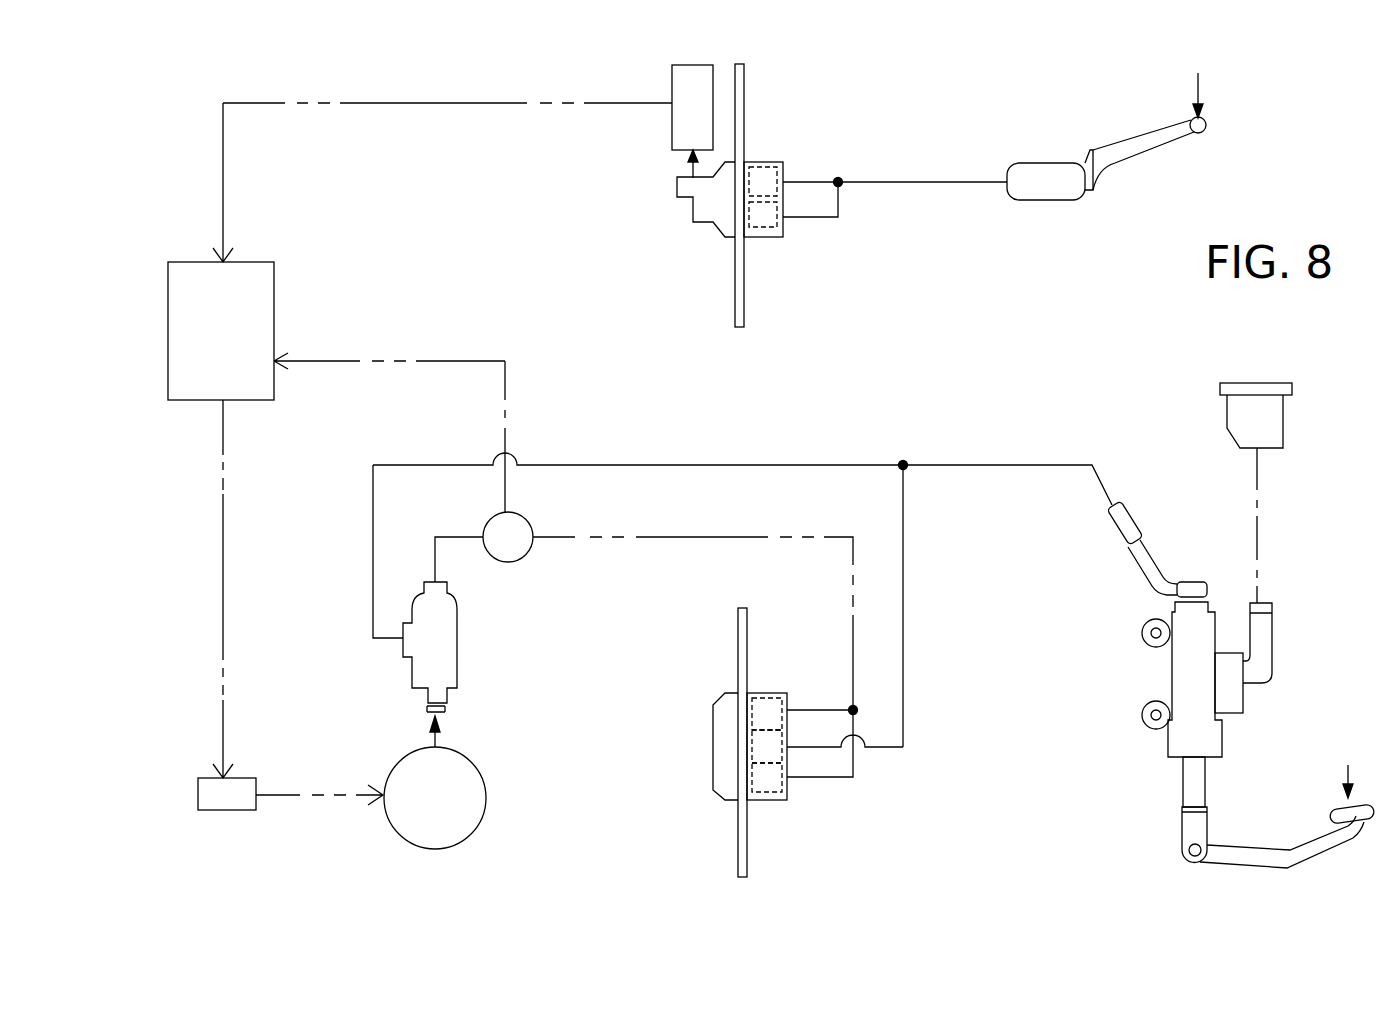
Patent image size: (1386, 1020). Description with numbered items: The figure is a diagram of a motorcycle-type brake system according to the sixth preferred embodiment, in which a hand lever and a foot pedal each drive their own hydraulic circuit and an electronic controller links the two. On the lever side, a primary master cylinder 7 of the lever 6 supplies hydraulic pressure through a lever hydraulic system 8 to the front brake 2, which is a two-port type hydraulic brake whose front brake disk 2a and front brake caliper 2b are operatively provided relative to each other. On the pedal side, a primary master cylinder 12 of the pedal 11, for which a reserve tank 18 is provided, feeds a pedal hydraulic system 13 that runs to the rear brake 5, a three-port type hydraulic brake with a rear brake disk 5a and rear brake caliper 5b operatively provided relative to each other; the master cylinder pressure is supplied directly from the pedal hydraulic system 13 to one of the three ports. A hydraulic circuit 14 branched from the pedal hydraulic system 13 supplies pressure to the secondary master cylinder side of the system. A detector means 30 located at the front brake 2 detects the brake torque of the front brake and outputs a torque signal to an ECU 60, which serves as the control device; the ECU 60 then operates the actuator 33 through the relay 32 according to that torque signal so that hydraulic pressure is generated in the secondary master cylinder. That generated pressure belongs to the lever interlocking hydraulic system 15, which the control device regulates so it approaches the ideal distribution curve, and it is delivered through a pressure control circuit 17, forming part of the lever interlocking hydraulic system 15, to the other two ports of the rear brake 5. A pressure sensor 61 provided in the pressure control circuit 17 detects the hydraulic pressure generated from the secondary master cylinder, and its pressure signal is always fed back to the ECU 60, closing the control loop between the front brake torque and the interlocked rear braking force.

The front brake 2 is at (749, 208).
The front brake disk 2a is at (744, 311).
The front brake caliper 2b is at (772, 238).
The rear brake 5 is at (773, 742).
The rear brake disk 5a is at (738, 637).
The rear brake caliper 5b is at (713, 735).
The lever 6 is at (1147, 140).
The primary master cylinder 7 is at (1045, 202).
The lever hydraulic system 8 is at (920, 178).
The pedal 11 is at (1330, 812).
The primary master cylinder 12 is at (1172, 680).
The pedal hydraulic system 13 is at (998, 465).
The hydraulic circuit 14 is at (690, 465).
The lever interlocking hydraulic system 15 is at (468, 530).
The pressure control circuit 17 is at (676, 540).
The reserve tank 18 is at (1277, 448).
The detector means 30 is at (672, 87).
The relay 32 is at (222, 812).
The actuator 33 is at (470, 835).
The ECU 60 is at (274, 292).
The pressure sensor 61 is at (527, 555).